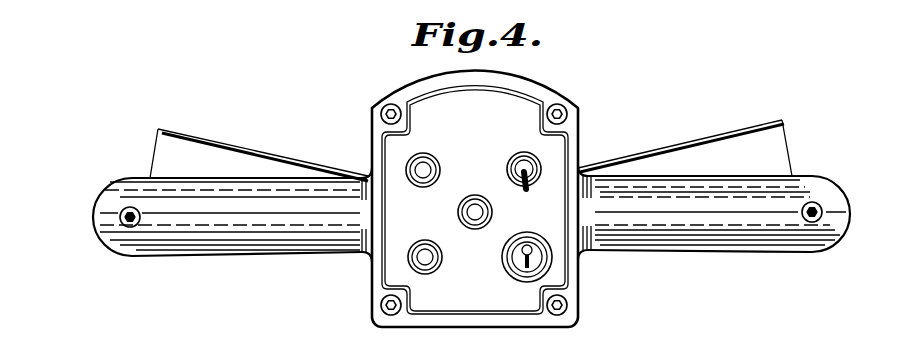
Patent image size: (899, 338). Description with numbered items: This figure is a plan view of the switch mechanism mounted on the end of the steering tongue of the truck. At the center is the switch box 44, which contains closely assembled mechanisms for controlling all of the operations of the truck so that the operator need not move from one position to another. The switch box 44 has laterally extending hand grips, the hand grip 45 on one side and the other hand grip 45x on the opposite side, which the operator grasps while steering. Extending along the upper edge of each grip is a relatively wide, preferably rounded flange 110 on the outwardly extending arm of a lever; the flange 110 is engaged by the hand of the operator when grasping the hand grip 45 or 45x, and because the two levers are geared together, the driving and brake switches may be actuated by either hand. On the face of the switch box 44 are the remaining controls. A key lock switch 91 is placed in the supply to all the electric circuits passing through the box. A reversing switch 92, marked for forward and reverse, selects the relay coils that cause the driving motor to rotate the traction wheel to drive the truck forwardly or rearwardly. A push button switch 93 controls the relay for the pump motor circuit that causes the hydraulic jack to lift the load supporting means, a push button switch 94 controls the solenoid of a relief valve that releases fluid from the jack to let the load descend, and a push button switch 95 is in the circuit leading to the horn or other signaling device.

The switch box 44 is at (578, 273).
The hand grip 45 is at (730, 233).
The other hand grip 45x is at (262, 244).
The key lock switch 91 is at (522, 260).
The reversing switch 92 is at (532, 169).
The push button switch 93 is at (425, 171).
The push button switch 94 is at (441, 260).
The push button switch 95 is at (467, 210).
The flange 110 is at (240, 152).